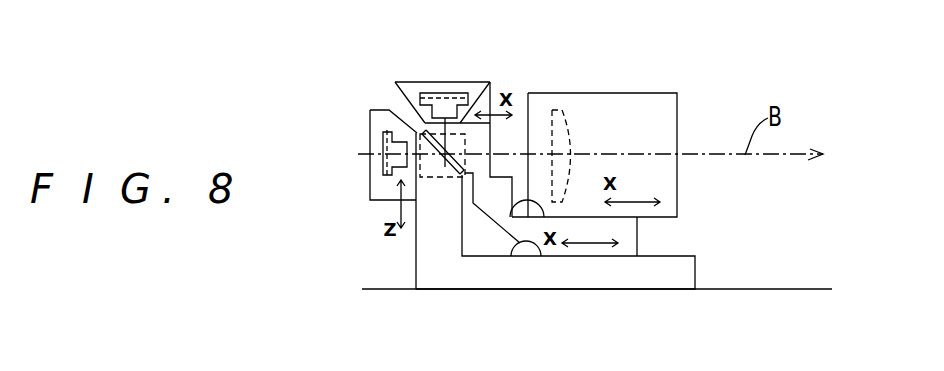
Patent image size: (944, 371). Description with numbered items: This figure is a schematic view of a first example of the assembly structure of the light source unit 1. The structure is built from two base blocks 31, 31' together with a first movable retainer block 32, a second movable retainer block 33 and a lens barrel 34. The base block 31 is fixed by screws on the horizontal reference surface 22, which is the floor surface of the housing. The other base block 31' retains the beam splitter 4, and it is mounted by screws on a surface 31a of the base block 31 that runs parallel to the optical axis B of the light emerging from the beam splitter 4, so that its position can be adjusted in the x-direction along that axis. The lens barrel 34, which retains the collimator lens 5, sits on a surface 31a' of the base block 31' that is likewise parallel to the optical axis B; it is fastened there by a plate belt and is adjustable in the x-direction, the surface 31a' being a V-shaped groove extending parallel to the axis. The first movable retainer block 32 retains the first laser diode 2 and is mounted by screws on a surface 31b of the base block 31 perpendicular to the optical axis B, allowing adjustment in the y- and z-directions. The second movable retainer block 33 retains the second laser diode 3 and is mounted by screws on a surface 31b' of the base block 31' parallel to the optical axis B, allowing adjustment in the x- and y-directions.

The light source unit 1 is at (587, 22).
The first laser diode 2 is at (358, 154).
The second laser diode 3 is at (460, 92).
The beam splitter 4 is at (440, 178).
The collimator lens 5 is at (570, 125).
The horizontal reference surface 22 is at (745, 289).
The base block 31 is at (555, 239).
The base block 31' is at (685, 232).
The surface 31a is at (515, 291).
The surface 31a' is at (479, 257).
The surface 31b is at (392, 195).
The surface 31b' is at (515, 122).
The first movable retainer block 32 is at (368, 178).
The second movable retainer block 33 is at (418, 82).
The lens barrel 34 is at (663, 93).